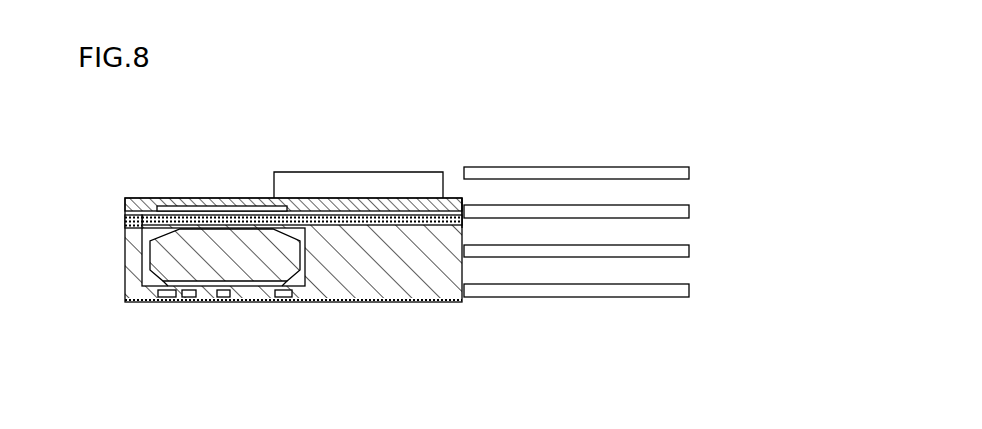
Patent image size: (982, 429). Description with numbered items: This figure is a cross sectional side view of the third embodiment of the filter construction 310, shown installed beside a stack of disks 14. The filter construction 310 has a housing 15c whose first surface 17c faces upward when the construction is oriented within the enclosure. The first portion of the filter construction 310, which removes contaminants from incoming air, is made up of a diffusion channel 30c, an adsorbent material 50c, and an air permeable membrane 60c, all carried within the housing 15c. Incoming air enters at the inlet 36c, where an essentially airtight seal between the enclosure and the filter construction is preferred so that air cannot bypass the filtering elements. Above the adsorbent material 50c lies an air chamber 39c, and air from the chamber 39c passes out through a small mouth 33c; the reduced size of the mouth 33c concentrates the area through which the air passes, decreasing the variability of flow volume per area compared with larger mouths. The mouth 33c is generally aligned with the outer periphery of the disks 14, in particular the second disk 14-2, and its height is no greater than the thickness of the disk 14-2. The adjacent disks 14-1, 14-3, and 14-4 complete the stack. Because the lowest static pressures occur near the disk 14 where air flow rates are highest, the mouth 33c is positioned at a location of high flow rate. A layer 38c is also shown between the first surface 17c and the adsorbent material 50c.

The filter construction 310 is at (367, 145).
The first surface 17c is at (148, 200).
The housing 15c is at (220, 197).
The air chamber 39c is at (248, 215).
The adhesive layer 38c is at (263, 222).
The mouth 33c is at (468, 201).
The air permeable membrane 60c is at (126, 220).
The adsorbent material 50c is at (143, 257).
The diffusion channel 30c is at (183, 299).
The inlet 36c is at (225, 302).
The disk 14 is at (690, 173).
The disk 14-1 is at (638, 166).
The disk 14-2 is at (638, 205).
The disk 14-3 is at (638, 245).
The disk 14-4 is at (638, 284).